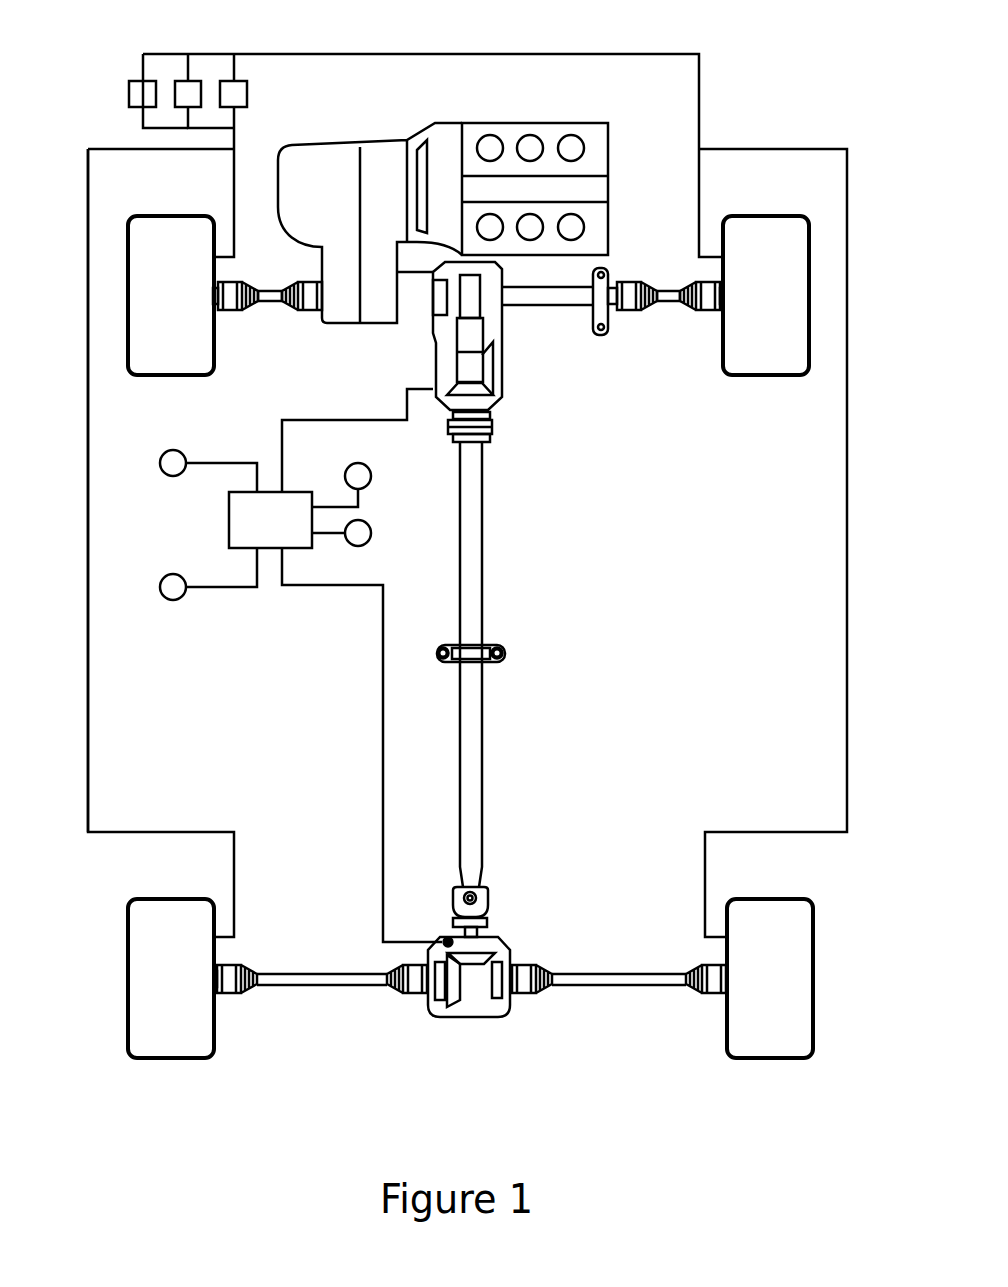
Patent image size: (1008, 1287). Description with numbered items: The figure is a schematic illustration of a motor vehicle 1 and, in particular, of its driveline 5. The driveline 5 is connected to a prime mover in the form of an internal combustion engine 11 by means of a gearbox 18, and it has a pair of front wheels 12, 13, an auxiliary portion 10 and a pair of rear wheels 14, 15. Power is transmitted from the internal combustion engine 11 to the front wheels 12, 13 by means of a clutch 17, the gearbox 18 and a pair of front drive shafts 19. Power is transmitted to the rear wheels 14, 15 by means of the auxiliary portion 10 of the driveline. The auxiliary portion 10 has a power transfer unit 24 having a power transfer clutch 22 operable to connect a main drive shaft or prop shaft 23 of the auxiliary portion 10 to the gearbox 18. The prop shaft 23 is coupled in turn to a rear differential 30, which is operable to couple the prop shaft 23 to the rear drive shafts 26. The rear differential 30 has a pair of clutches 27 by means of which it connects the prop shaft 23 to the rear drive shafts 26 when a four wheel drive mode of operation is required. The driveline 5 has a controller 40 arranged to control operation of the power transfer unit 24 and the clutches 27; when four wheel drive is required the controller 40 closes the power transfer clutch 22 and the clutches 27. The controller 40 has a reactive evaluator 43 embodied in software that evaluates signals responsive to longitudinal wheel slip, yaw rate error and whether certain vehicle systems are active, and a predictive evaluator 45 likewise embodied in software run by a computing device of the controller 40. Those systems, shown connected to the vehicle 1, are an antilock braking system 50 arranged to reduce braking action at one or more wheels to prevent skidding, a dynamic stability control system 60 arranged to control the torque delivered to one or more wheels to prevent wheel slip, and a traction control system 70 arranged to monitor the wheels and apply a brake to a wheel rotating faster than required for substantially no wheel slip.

The motor vehicle 1 is at (802, 82).
The driveline 5 is at (110, 563).
The auxiliary portion 10 is at (417, 603).
The internal combustion engine 11 is at (600, 138).
The front wheel 12 is at (165, 232).
The front wheel 13 is at (775, 232).
The rear wheel 14 is at (175, 1043).
The rear wheel 15 is at (763, 1043).
The clutch 17 is at (457, 197).
The gearbox 18 is at (380, 163).
The front drive shafts 19 is at (268, 297).
The power transfer clutch 22 is at (442, 295).
The prop shaft 23 is at (470, 560).
The power transfer unit 24 is at (503, 343).
The rear drive shafts 26 is at (333, 978).
The clutches 27 is at (435, 1012).
The rear differential 30 is at (452, 1018).
The controller 40 is at (229, 520).
The reactive evaluator 43 is at (370, 472).
The predictive evaluator 45 is at (168, 600).
The antilock braking system 50 is at (135, 90).
The dynamic stability control system 60 is at (185, 85).
The traction control system 70 is at (237, 85).